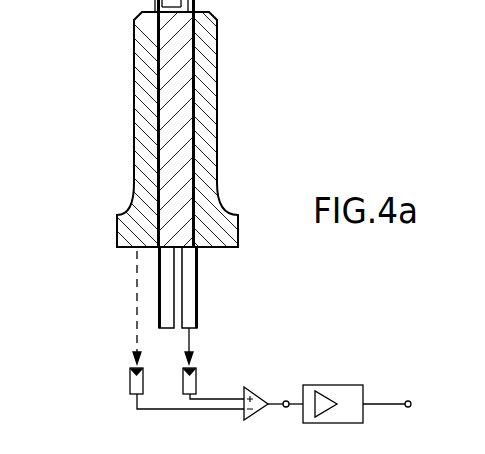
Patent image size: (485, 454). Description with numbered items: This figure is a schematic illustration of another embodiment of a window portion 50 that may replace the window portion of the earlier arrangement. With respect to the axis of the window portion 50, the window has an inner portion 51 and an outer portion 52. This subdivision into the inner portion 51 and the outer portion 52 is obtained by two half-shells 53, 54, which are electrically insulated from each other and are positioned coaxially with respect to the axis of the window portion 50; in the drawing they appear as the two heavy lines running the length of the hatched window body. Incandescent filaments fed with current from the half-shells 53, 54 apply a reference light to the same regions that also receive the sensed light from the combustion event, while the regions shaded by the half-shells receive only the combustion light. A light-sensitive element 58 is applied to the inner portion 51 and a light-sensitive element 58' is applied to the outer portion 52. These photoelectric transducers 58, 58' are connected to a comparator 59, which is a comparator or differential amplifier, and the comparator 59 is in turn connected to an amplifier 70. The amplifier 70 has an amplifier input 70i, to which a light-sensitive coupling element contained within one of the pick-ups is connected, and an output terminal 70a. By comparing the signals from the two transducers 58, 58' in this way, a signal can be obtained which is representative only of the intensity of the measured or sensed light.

The window portion 50 is at (230, 118).
The inner portion 51 is at (176, 89).
The outer portion 52 is at (207, 178).
The half-shell 53 is at (191, 40).
The half-shell 54 is at (158, 50).
The light-sensitive element 58 is at (211, 369).
The light-sensitive element 58' is at (102, 374).
The comparator 59 is at (254, 386).
The amplifier 70 is at (340, 397).
The amplifier input 70i is at (287, 408).
The amplifier output 70a is at (408, 408).